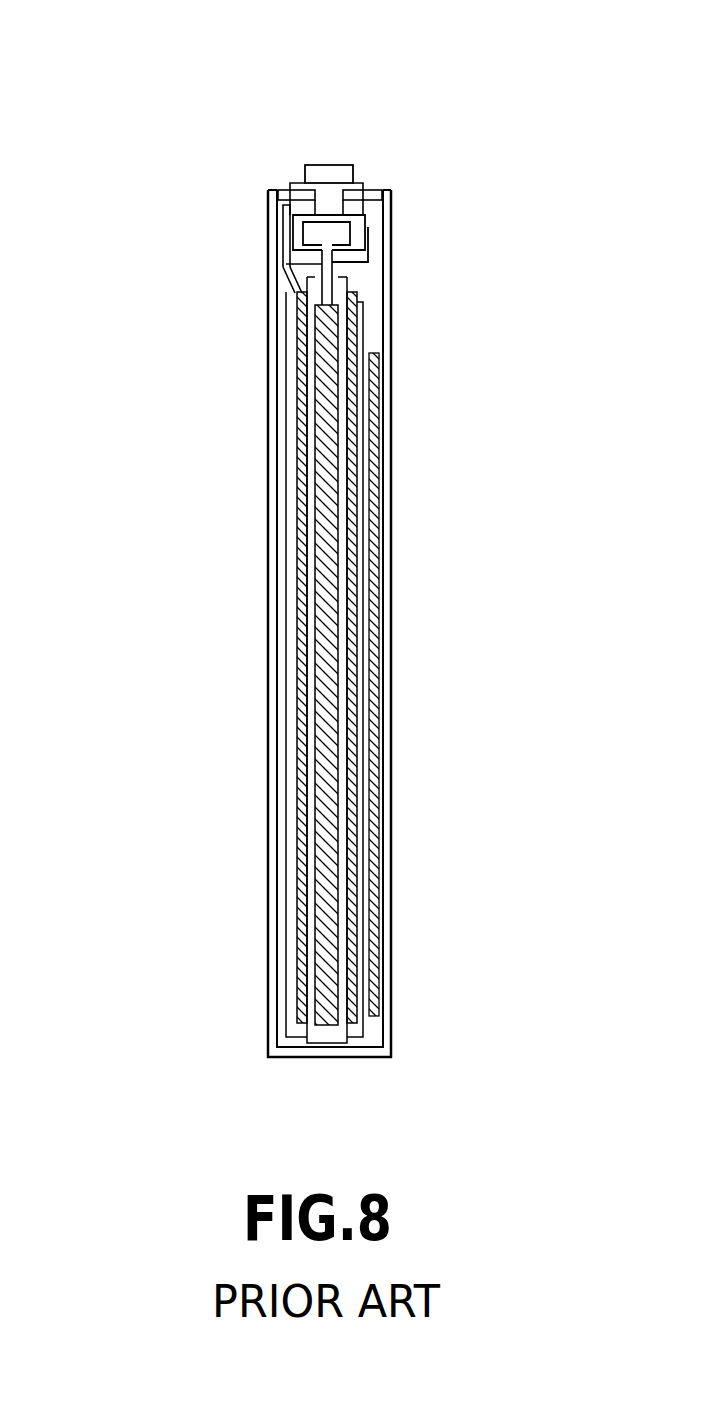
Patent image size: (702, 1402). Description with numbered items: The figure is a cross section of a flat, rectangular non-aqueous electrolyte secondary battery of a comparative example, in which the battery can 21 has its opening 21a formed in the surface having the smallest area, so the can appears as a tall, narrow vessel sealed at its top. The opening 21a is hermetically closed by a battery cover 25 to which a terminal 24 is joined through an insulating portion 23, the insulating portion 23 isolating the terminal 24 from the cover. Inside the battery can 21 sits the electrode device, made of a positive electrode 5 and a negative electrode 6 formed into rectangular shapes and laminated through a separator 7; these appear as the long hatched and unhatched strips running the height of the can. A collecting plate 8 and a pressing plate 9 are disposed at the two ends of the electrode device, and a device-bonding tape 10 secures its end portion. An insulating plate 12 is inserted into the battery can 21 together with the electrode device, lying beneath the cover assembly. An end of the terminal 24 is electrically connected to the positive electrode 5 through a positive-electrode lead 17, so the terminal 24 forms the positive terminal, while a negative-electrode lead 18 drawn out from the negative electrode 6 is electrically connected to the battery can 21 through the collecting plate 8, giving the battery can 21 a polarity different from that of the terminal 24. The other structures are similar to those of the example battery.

The battery can 21 is at (388, 527).
The opening 21a is at (384, 148).
The terminal 24 is at (333, 180).
The insulating portion 23 is at (303, 184).
The battery cover 25 is at (372, 196).
The negative-electrode lead 18 is at (283, 240).
The positive-electrode lead 17 is at (300, 272).
The insulating plate 12 is at (363, 246).
The device-bonding tape 10 is at (283, 456).
The negative electrode 6 is at (298, 965).
The collecting plate 8 is at (290, 340).
The positive electrode 5 is at (340, 876).
The separator 7 is at (343, 962).
The pressing plate 9 is at (357, 385).